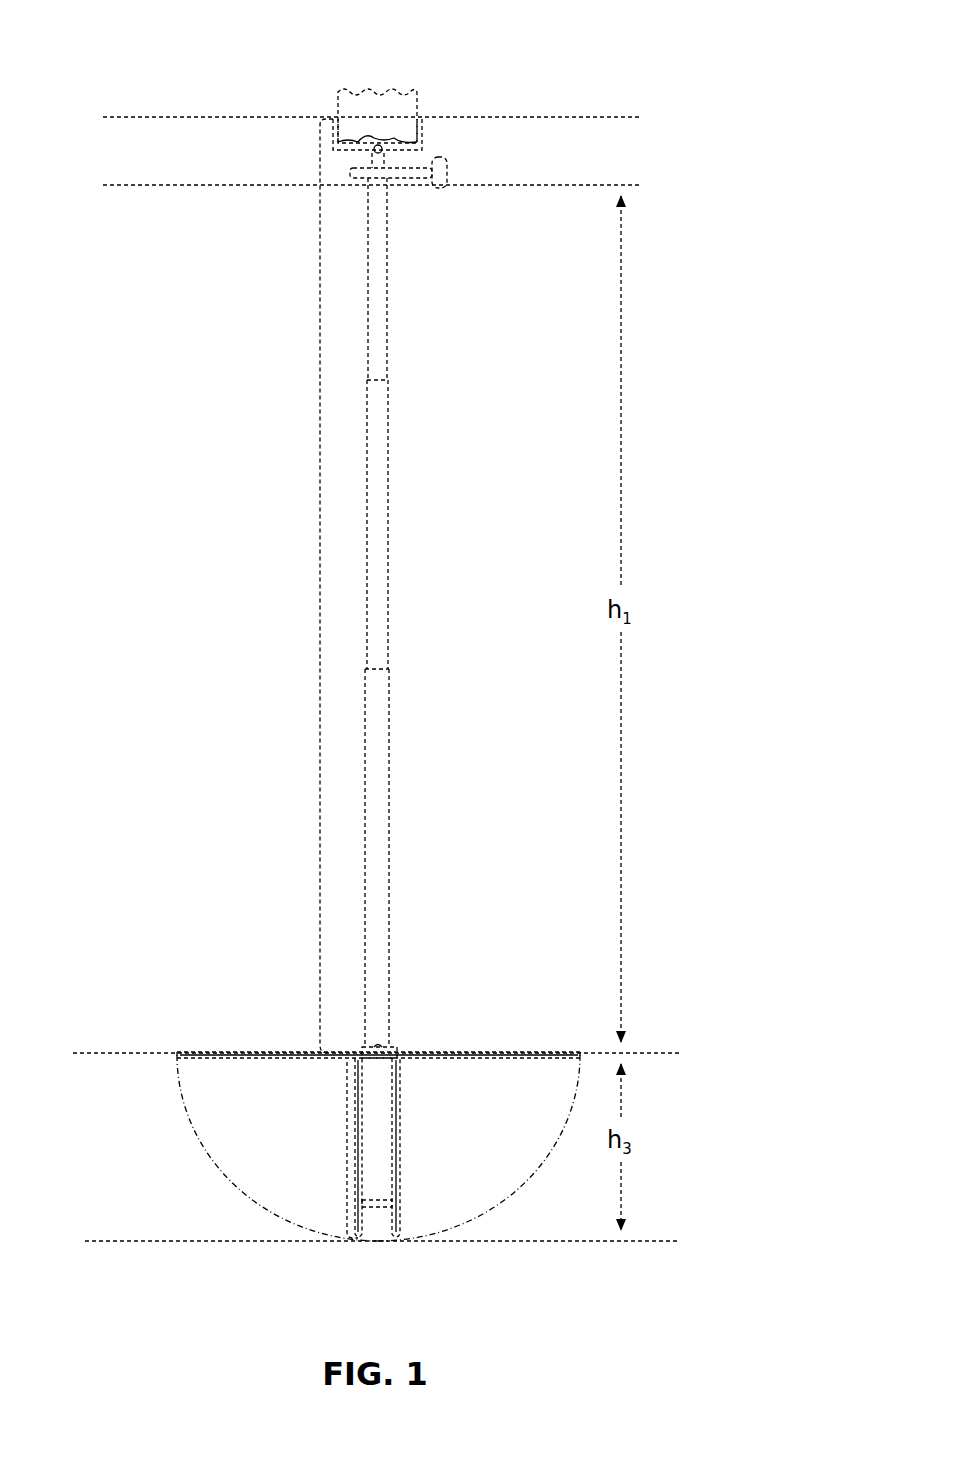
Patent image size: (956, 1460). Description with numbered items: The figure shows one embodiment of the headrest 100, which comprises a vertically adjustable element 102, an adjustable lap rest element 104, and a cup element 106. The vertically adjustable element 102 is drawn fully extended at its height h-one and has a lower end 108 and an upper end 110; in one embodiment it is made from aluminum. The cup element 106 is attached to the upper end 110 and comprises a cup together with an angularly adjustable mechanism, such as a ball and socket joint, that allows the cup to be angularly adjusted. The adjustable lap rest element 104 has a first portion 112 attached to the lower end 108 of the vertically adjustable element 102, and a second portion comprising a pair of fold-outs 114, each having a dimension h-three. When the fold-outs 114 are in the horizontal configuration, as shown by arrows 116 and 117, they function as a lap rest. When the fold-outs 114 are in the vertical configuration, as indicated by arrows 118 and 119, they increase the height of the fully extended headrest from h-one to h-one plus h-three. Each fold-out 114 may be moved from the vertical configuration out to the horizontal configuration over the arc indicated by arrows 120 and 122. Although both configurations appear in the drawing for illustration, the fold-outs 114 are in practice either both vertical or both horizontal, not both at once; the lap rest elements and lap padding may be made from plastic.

The headrest 100 is at (549, 86).
The vertically adjustable element 102 is at (316, 605).
The adjustable lap rest element 104 is at (343, 1150).
The cup element 106 is at (314, 147).
The lower end 108 is at (398, 1031).
The upper end 110 is at (399, 199).
The first portion 112 is at (406, 1071).
The fold-outs 114 is at (406, 1120).
The arrow 116 is at (208, 1075).
The arrow 117 is at (490, 1074).
The arrow 118 is at (401, 1180).
The arrow 119 is at (363, 1165).
The arrow 120 is at (558, 1138).
The arrow 122 is at (213, 1170).